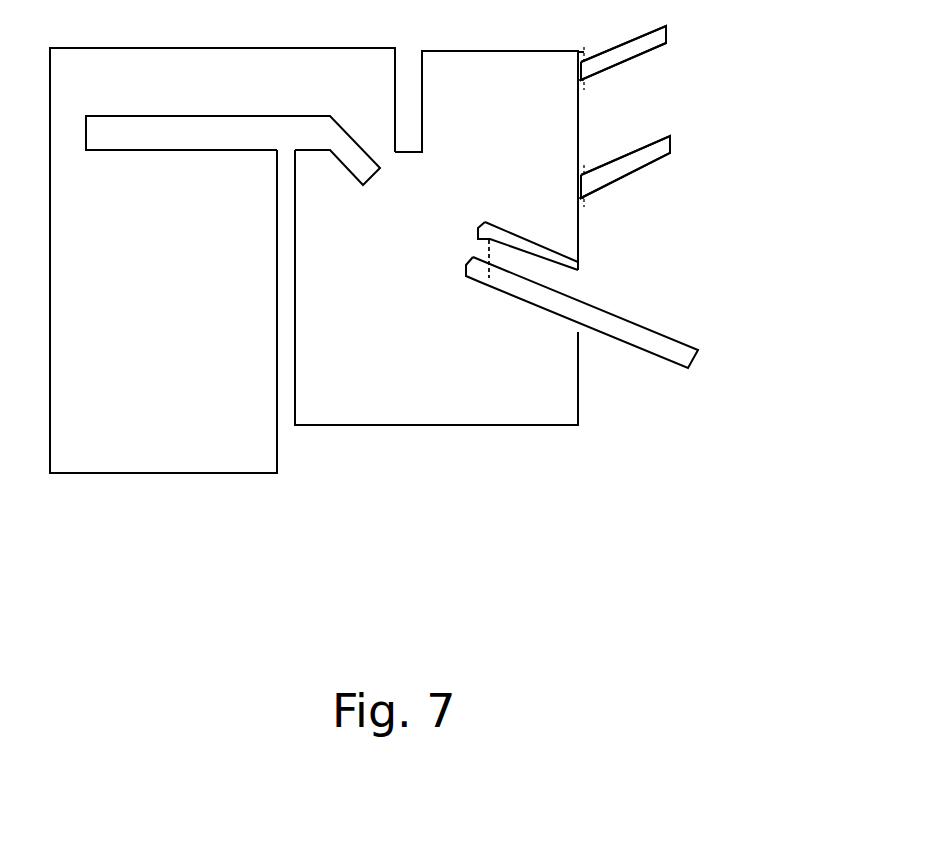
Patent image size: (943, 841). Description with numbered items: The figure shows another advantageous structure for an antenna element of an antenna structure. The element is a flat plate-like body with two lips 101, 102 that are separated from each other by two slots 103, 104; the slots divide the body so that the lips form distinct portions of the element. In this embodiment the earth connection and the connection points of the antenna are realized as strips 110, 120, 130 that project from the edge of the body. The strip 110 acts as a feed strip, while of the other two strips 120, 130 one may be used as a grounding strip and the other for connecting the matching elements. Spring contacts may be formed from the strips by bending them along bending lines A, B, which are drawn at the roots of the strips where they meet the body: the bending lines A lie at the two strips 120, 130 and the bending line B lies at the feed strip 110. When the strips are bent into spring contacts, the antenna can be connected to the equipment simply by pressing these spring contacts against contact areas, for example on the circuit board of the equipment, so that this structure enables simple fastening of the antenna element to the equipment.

The lip 101 is at (436, 274).
The lip 102 is at (222, 297).
The slot 103 is at (233, 166).
The slot 104 is at (242, 311).
The feed strip 110 is at (638, 317).
The strip 130 is at (707, 118).
The strip 120 is at (625, 112).
The bending line A is at (626, 163).
The bending line B is at (444, 281).